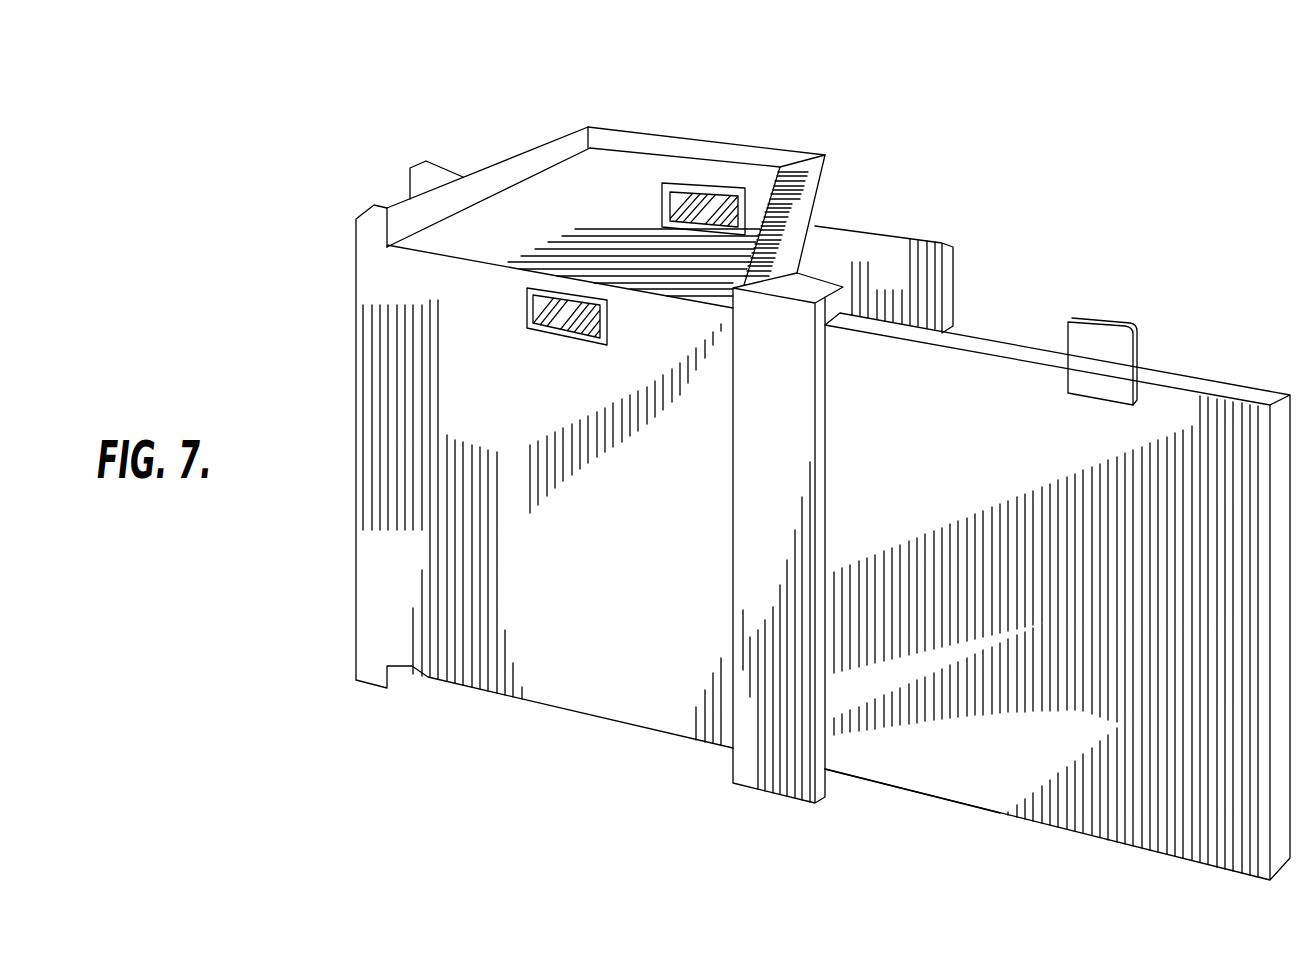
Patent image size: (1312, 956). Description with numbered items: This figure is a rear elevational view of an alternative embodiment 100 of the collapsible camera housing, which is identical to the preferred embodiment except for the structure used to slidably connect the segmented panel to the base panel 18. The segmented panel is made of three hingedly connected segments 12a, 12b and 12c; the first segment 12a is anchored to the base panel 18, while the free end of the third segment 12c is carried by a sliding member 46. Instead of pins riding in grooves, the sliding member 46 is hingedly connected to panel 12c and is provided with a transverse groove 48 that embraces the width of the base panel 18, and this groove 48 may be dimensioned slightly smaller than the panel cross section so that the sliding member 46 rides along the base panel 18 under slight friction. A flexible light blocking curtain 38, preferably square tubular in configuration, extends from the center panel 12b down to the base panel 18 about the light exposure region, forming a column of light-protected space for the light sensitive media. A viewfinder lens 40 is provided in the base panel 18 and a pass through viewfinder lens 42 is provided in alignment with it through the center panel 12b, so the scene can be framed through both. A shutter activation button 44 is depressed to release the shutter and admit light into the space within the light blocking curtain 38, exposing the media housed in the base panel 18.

The alternative embodiment 100 is at (1062, 252).
The first segment 12a is at (480, 183).
The center panel 12b is at (722, 155).
The third segment 12c is at (810, 183).
The base panel 18 is at (573, 686).
The light blocking curtain 38 is at (568, 248).
The viewfinder lens 40 is at (557, 300).
The pass through viewfinder lens 42 is at (700, 203).
The shutter activation button 44 is at (1103, 365).
The sliding member 46 is at (752, 770).
The transverse groove 48 is at (827, 753).